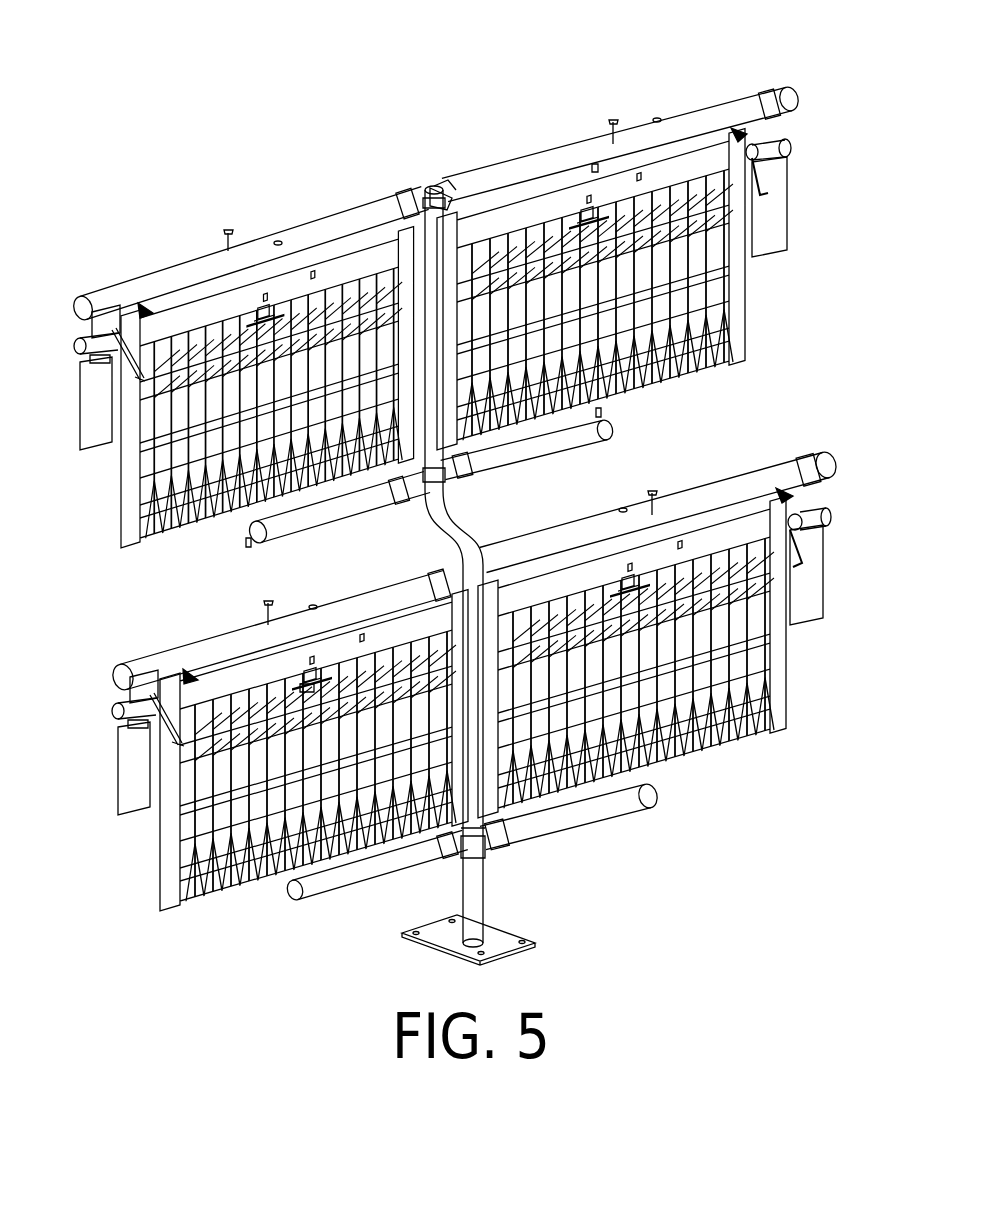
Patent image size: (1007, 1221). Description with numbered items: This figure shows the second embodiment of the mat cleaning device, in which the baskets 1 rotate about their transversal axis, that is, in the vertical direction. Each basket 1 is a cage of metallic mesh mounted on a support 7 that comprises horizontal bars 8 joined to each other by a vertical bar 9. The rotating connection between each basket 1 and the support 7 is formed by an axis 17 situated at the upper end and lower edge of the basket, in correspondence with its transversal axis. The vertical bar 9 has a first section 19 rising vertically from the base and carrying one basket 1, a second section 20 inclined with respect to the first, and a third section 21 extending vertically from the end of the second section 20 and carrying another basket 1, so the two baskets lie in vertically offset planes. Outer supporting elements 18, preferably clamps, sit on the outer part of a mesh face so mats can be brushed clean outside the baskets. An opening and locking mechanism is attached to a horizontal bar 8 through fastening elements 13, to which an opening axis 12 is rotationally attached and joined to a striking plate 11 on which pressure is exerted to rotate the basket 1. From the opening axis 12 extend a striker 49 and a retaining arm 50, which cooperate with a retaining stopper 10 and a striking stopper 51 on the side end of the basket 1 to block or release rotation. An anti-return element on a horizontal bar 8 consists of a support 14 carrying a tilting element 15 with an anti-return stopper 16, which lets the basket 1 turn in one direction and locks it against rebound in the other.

The basket 1 is at (278, 720).
The support 7 is at (775, 452).
The horizontal bar 8 is at (300, 240).
The vertical bar 9 is at (435, 240).
The retaining stopper 10 is at (160, 700).
The striking plate 11 is at (98, 420).
The opening axis 12 is at (82, 337).
The fastening elements 13 is at (103, 323).
The support 14 is at (760, 128).
The tilting element 15 is at (775, 92).
The anti-return stopper 16 is at (740, 125).
The axis 17 is at (592, 166).
The outer supporting elements 18 is at (308, 680).
The first section 19 is at (475, 890).
The second section 20 is at (460, 537).
The third section 21 is at (450, 196).
The striker 49 is at (160, 737).
The retaining arm 50 is at (167, 700).
The striking stopper 51 is at (165, 748).